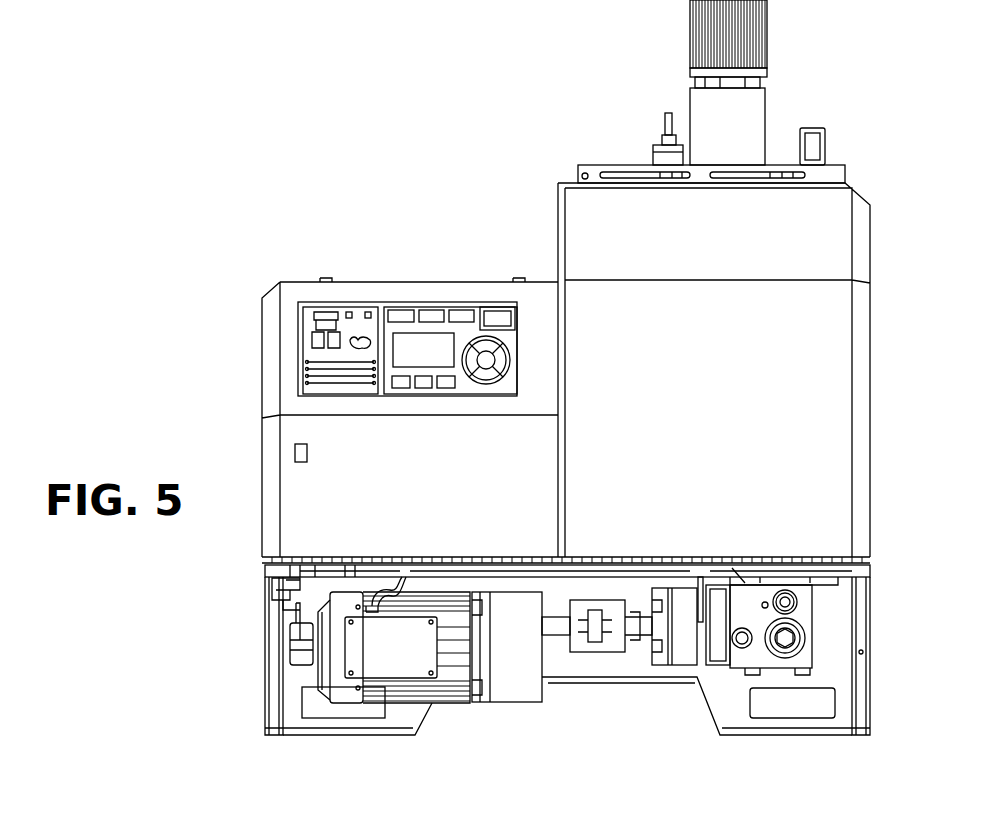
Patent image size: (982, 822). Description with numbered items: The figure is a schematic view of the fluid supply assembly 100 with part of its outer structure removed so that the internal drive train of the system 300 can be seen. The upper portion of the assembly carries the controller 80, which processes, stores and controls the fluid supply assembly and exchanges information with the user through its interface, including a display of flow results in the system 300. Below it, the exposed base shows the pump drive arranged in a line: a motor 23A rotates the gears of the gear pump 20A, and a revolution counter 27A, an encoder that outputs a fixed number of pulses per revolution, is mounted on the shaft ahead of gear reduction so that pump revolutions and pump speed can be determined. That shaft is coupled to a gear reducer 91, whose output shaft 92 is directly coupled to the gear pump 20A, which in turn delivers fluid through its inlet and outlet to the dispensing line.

The system 300 is at (430, 82).
The fluid supply assembly 100 is at (596, 132).
The controller 80 is at (437, 345).
The revolution counter 27A is at (290, 650).
The motor 23A is at (348, 695).
The gear reducer 91 is at (520, 703).
The output shaft 92 is at (613, 645).
The gear pump 20A is at (690, 655).